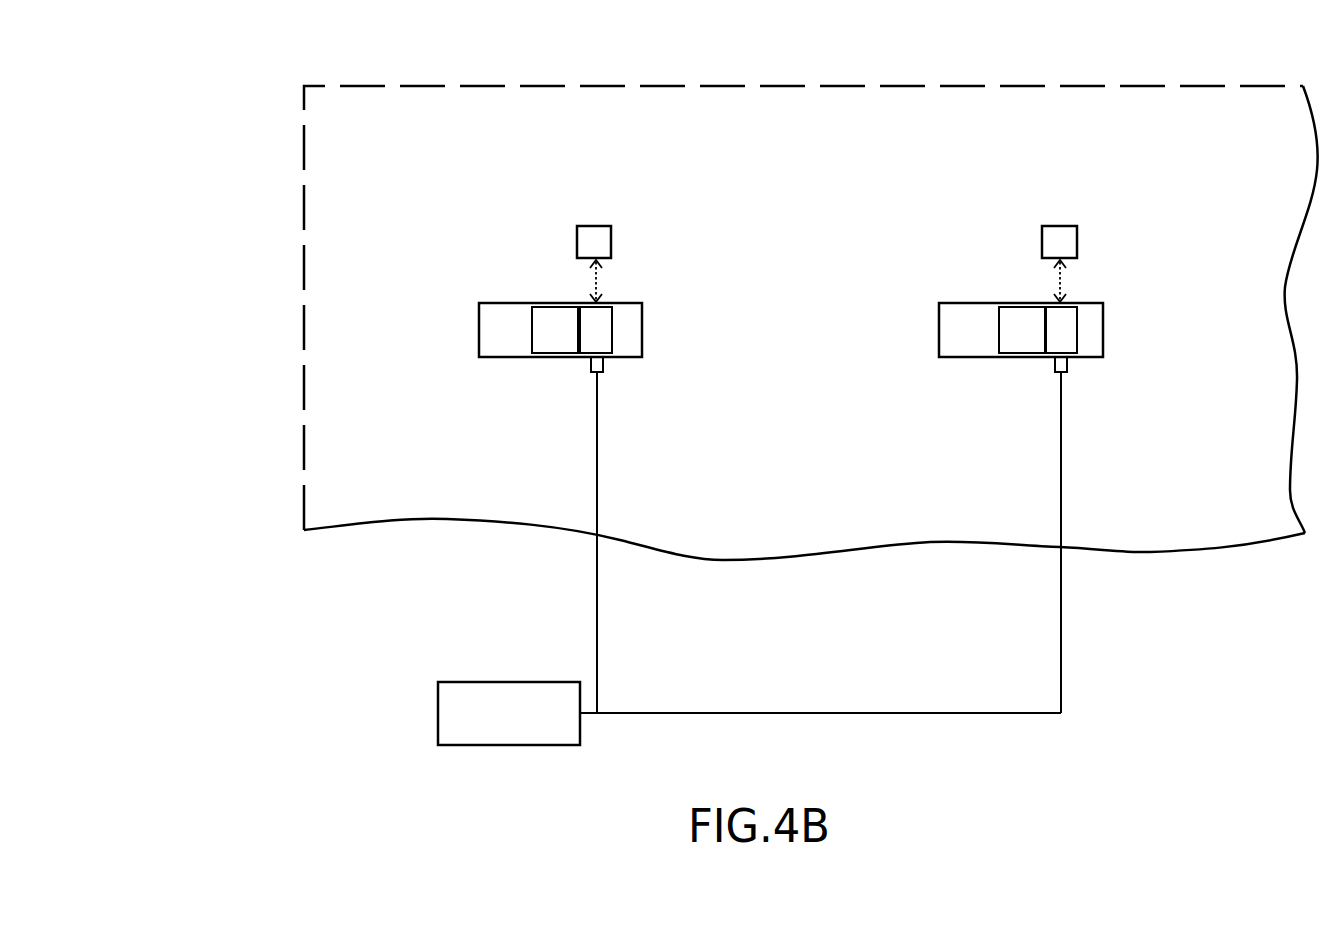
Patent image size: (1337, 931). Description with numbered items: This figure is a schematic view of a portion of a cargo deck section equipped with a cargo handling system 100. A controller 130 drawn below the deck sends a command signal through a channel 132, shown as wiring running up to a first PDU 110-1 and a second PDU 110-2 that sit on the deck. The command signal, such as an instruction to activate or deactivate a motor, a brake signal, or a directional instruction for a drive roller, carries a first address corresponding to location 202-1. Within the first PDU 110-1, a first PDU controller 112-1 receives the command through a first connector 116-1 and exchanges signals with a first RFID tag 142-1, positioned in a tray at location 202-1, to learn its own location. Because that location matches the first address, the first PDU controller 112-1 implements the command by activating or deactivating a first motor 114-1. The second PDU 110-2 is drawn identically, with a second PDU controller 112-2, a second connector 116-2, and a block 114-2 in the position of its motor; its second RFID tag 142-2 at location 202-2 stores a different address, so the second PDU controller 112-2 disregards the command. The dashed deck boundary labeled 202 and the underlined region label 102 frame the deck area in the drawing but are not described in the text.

The cargo handling system 100 is at (202, 112).
The surface region 102 is at (759, 149).
The platform / surface 202 is at (302, 338).
The first PDU 110-1 is at (581, 316).
The first PDU controller 112-1 is at (612, 337).
The first motor 114-1 is at (532, 338).
The first connector 116-1 is at (590, 366).
The first RFID tag 142-1 is at (597, 226).
The location 202-1 is at (616, 297).
The second PDU 110-2 is at (1044, 317).
The second PDU controller 112-2 is at (1077, 327).
The second sensor module 114-2 is at (999, 343).
The second connector 116-2 is at (1052, 366).
The second RFID tag 142-2 is at (1060, 226).
The location 202-2 is at (1066, 303).
The controller 130 is at (438, 712).
The channel 132 is at (1059, 652).